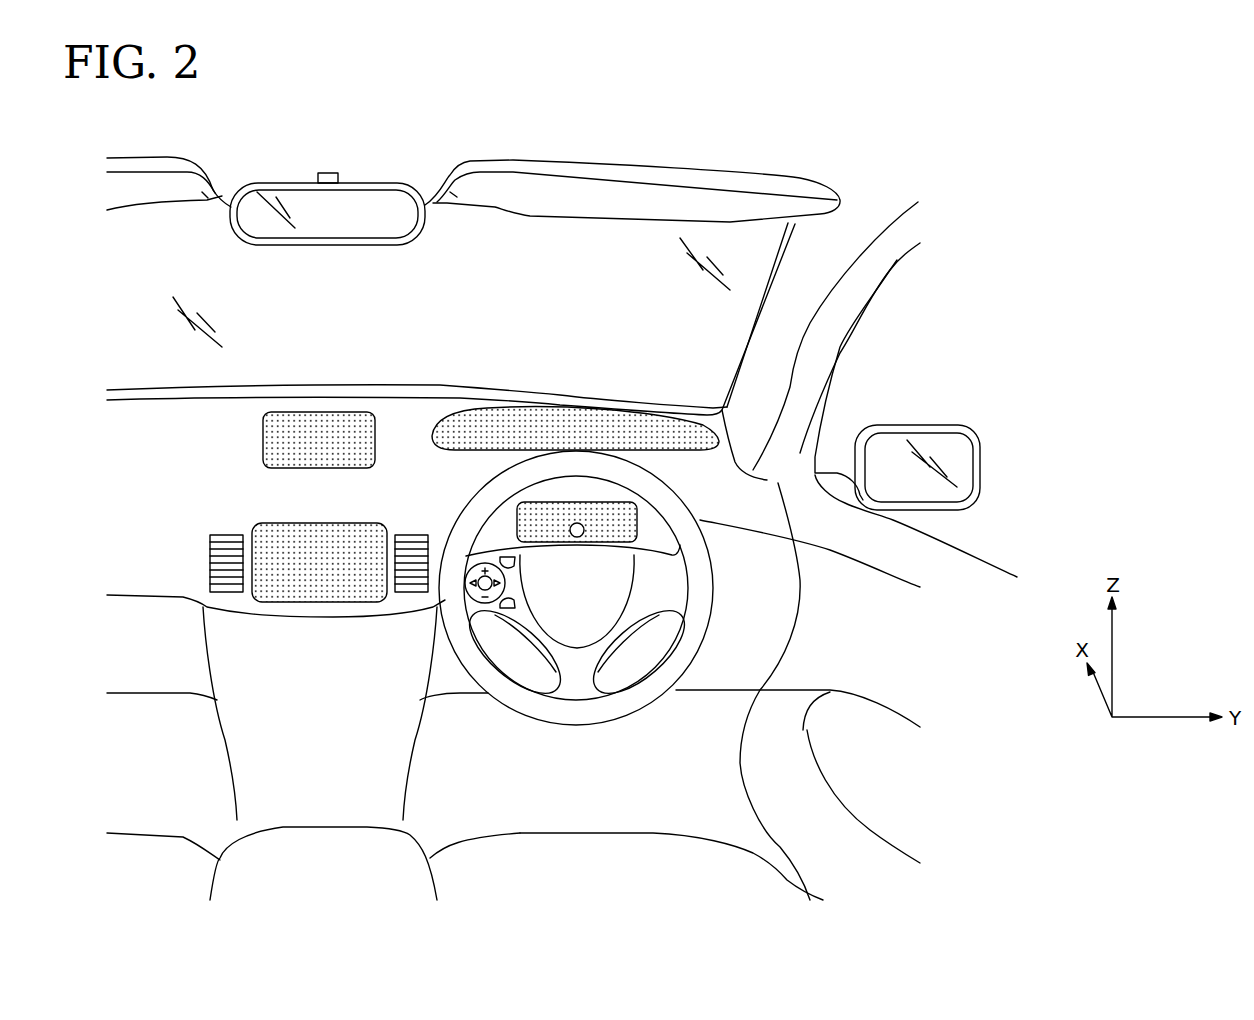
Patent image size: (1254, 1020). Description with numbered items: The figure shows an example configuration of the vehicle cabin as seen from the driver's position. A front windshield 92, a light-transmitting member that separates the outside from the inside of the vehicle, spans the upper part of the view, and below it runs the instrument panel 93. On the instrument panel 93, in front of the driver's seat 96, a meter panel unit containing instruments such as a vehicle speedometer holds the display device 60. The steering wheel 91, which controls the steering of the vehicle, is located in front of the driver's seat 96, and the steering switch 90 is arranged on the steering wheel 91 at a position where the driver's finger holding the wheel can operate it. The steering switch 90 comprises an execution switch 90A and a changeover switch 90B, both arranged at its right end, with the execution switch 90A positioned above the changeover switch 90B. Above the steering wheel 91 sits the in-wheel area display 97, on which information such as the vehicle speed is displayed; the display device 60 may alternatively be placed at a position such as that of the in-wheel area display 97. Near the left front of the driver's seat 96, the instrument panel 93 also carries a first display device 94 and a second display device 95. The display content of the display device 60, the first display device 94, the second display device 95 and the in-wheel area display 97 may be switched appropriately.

The display device 60 is at (577, 423).
The steering switch 90 is at (467, 567).
The execution switch 90A is at (503, 556).
The changeover switch 90B is at (505, 606).
The steering wheel 91 is at (576, 725).
The front windshield 92 is at (533, 242).
The instrument panel 93 is at (407, 420).
The first display device 94 is at (320, 602).
The second display device 95 is at (317, 420).
The driver's seat 96 is at (600, 891).
The in-wheel area display 97 is at (577, 542).